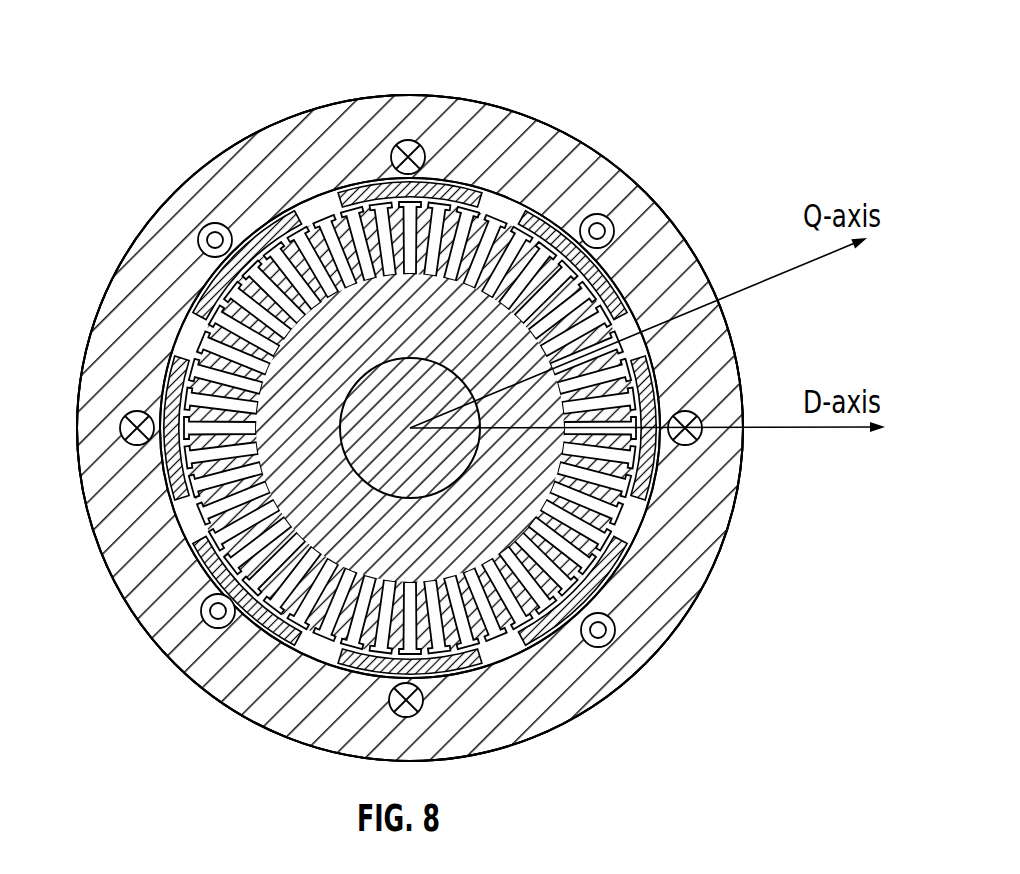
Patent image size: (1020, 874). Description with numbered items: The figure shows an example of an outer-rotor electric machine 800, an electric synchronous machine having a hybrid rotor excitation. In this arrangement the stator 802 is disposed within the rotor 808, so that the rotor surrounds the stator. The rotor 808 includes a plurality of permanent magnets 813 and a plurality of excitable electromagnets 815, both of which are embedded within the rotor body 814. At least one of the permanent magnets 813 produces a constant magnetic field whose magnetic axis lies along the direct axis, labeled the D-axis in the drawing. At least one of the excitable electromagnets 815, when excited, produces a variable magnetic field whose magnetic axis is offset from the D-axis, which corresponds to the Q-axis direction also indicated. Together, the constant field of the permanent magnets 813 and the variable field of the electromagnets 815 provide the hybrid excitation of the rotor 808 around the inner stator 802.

The outer-rotor electric machine 800 is at (752, 40).
The stator 802 is at (205, 525).
The rotor 808 is at (113, 318).
The permanent magnets 813 is at (287, 212).
The rotor body 814 is at (680, 552).
The excitable electromagnets 815 is at (207, 243).